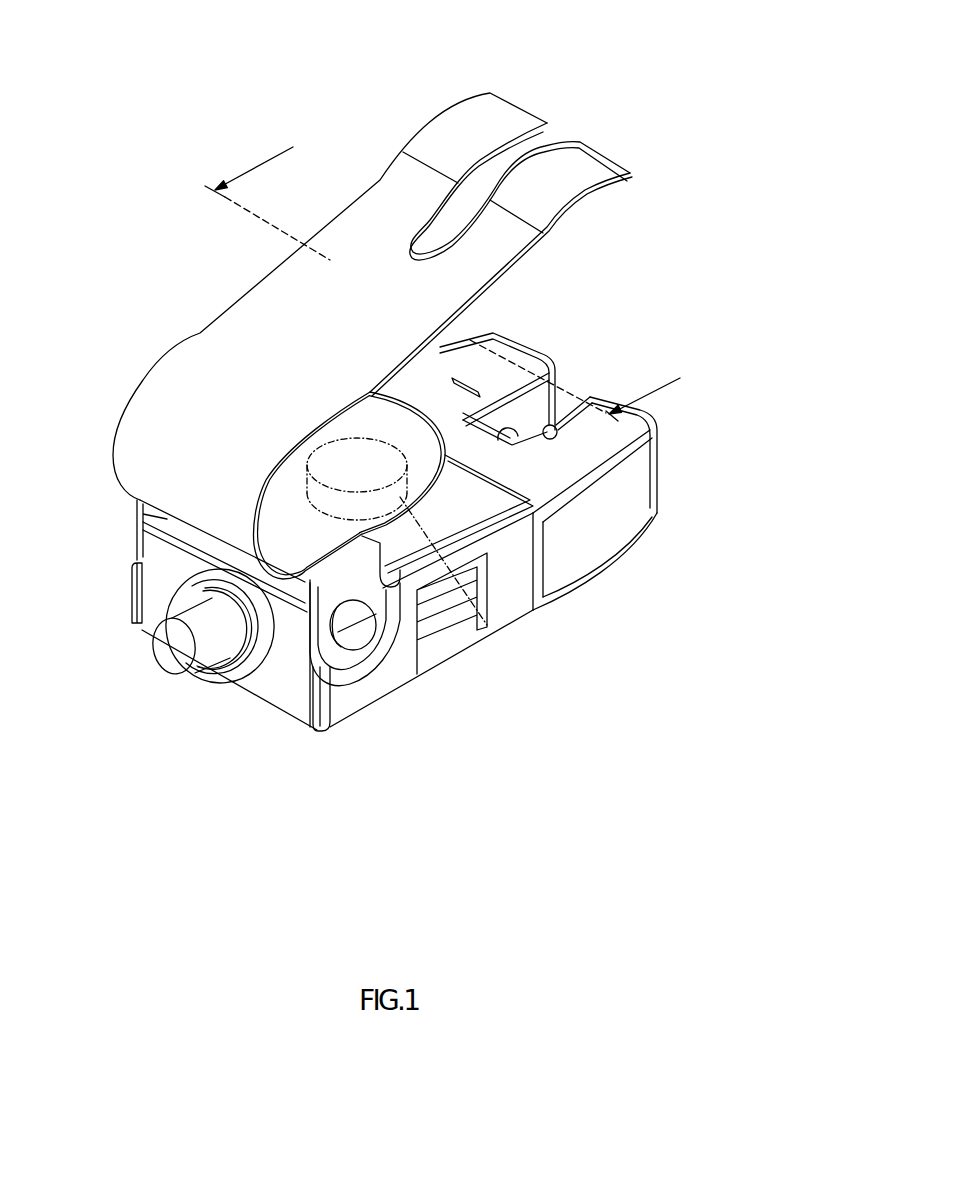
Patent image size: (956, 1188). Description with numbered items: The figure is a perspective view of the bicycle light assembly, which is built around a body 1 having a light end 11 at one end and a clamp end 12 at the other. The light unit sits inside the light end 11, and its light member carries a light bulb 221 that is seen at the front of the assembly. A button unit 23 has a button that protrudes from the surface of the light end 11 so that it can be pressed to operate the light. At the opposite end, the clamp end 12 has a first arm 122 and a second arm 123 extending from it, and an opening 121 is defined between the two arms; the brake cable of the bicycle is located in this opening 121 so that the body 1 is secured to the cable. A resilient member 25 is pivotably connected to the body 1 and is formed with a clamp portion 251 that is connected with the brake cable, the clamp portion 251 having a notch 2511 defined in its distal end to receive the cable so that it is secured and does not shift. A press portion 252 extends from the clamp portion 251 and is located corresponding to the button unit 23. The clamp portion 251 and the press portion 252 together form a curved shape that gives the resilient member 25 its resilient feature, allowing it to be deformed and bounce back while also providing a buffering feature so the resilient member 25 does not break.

The body 1 is at (674, 672).
The light end 11 is at (256, 727).
The clamp end 12 is at (614, 581).
The opening 121 is at (530, 398).
The first arm 122 is at (542, 345).
The second arm 123 is at (658, 462).
The light bulb 221 is at (168, 653).
The button unit 23 is at (490, 630).
The resilient member 25 is at (176, 294).
The clamp portion 251 is at (275, 298).
The notch 2511 is at (550, 137).
The press portion 252 is at (427, 470).